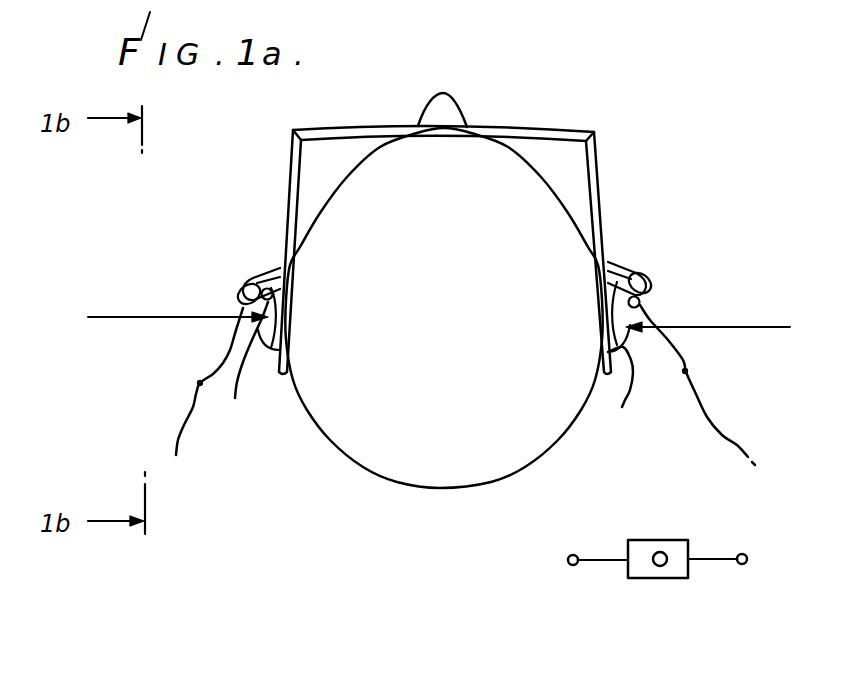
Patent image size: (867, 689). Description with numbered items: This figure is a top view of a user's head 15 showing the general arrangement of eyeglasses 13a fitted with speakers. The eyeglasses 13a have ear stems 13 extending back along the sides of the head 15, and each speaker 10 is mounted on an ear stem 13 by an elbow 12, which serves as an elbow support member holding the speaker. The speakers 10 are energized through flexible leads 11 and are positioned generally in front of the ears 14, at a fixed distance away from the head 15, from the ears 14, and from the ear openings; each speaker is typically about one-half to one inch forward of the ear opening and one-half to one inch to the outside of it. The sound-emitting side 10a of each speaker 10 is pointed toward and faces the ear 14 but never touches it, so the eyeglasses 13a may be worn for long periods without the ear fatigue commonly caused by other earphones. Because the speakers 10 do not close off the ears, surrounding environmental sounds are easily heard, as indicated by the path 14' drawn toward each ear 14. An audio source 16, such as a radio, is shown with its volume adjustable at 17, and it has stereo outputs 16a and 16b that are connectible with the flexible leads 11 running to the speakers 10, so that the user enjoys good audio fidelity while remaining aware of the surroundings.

The speaker 10 is at (242, 287).
The sound-emitting side 10a is at (273, 293).
The flexible leads 11 is at (221, 367).
The elbow 12 is at (268, 272).
The ear stem 13 is at (292, 161).
The eyeglasses 13a is at (554, 111).
The ear 14 is at (439, 370).
The path 14' is at (410, 326).
The head 15 is at (444, 398).
The audio source 16 is at (648, 579).
The stereo output 16a is at (568, 564).
The stereo output 16b is at (742, 553).
The volume adjustment 17 is at (651, 555).